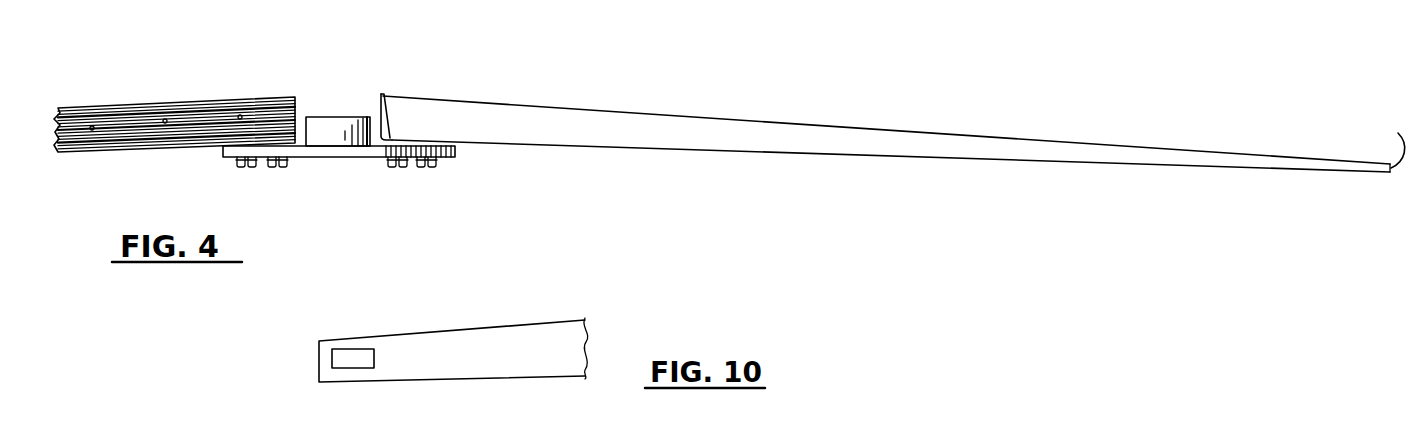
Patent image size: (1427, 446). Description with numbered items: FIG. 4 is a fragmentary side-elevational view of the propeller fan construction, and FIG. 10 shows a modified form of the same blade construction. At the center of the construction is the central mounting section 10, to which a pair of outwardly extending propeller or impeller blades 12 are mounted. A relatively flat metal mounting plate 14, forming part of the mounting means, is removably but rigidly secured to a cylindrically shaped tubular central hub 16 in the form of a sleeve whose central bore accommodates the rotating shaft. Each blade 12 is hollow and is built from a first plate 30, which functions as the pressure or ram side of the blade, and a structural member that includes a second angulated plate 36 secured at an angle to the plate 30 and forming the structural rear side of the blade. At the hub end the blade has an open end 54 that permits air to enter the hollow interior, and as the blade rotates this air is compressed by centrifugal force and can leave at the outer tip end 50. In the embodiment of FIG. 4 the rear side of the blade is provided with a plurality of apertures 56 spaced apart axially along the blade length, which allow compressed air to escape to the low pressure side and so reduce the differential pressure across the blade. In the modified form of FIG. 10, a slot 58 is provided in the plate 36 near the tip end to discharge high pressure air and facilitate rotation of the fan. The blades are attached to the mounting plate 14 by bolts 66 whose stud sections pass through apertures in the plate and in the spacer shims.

In FIG. 4, the central mounting section 10 is at (392, 91).
In FIG. 4, the propeller or impeller blades 12 is at (147, 92).
In FIG. 4, the mounting plate 14 is at (348, 149).
In FIG. 4, the central hub 16 is at (318, 122).
In FIG. 4, the first plate 30 is at (645, 125).
In FIG. 4, the second angulated plate 36 is at (215, 112).
In FIG. 10, the second angulated plate 36 is at (530, 344).
In FIG. 4, the tip end 50 is at (1397, 137).
In FIG. 4, the open end 54 is at (384, 128).
In FIG. 4, the apertures 56 is at (93, 126).
In FIG. 10, the slot 58 is at (341, 356).
In FIG. 4, the bolts 66 is at (438, 161).